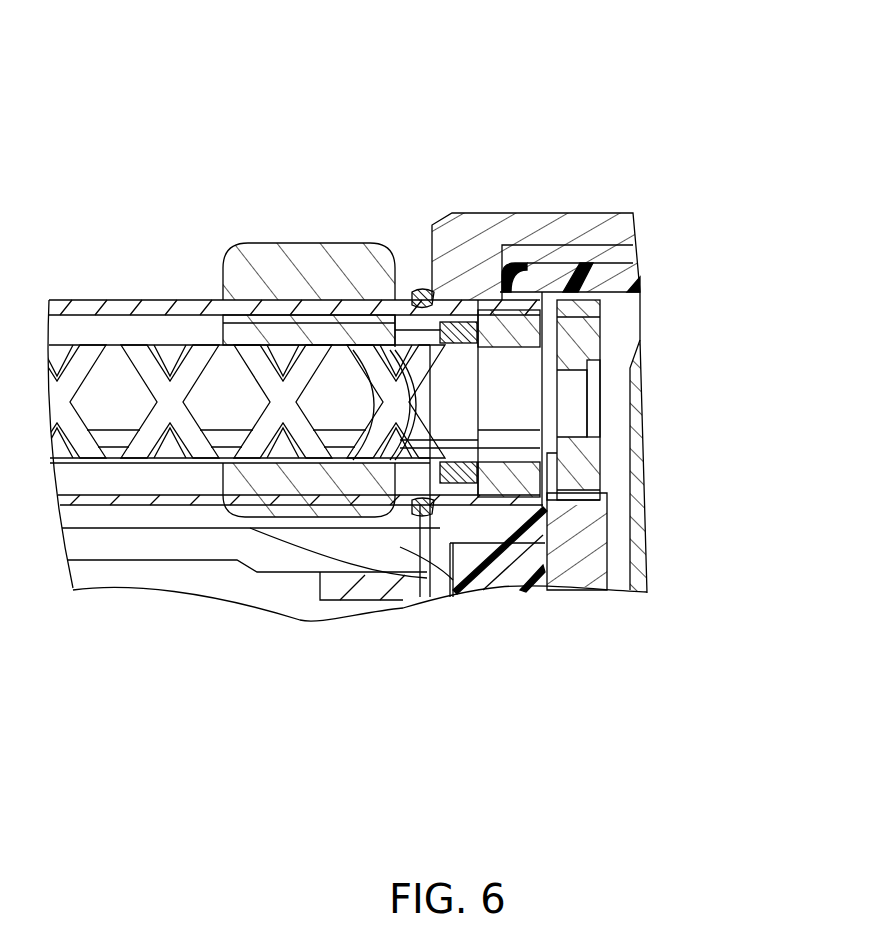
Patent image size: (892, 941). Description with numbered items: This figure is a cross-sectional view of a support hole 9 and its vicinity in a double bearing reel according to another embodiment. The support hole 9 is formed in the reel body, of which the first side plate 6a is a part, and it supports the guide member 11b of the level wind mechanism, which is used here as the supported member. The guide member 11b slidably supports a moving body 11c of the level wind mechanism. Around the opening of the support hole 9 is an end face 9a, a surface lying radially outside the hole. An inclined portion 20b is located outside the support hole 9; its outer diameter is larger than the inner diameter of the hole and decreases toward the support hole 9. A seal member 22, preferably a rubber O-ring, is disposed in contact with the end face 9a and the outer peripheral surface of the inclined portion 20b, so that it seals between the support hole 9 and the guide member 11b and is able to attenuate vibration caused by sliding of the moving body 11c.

The guide member 11b is at (157, 305).
The moving body 11c is at (300, 262).
The inclined portion 20b is at (388, 258).
The end face 9a is at (418, 292).
The first side plate 6a is at (509, 233).
The support hole 9 is at (560, 333).
The seal member 22 is at (427, 598).